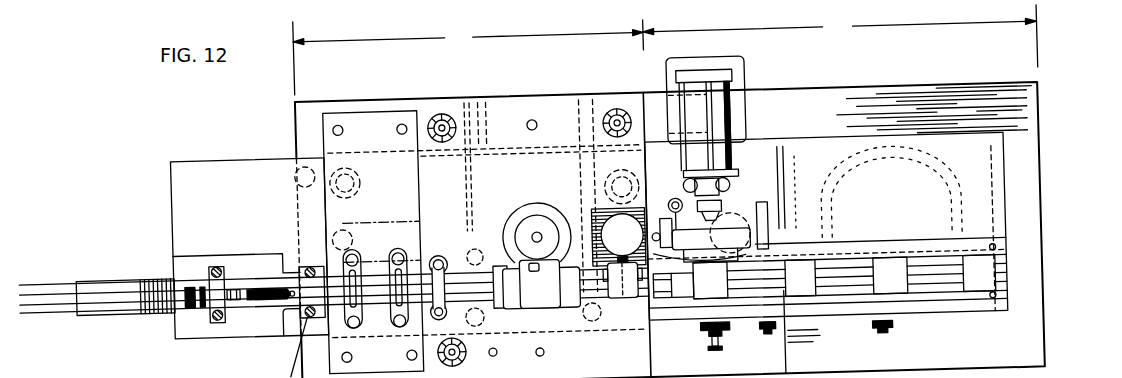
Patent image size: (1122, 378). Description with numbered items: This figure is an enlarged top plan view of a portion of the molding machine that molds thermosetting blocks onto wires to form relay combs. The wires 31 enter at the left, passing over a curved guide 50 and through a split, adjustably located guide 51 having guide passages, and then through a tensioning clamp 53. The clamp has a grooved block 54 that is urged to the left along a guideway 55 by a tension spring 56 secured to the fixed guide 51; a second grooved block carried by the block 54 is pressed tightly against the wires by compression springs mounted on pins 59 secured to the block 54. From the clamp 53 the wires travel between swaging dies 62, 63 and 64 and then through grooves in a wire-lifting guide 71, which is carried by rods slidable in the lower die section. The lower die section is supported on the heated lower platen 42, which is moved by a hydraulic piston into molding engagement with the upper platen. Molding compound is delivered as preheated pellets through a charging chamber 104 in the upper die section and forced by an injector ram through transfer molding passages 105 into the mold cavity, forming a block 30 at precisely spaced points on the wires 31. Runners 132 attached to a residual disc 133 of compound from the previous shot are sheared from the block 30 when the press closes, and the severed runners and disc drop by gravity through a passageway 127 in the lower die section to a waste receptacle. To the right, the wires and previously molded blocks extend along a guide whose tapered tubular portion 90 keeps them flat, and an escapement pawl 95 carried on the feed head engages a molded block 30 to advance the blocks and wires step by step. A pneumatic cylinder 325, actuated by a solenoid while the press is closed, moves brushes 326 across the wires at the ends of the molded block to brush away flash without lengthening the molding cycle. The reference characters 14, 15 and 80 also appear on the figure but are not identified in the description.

The feeding station 14 is at (469, 54).
The cutting station / section line 15 is at (29, 282).
The block 30 is at (878, 283).
The wires 31 is at (55, 296).
The lower platen 42 is at (1030, 123).
The curved guide 50 is at (136, 291).
The split, adjustably located guide 51 is at (216, 255).
The tensioning clamp 53 is at (291, 318).
The grooved block 54 is at (312, 281).
The guideway 55 is at (286, 308).
The tension spring 56 is at (272, 280).
The pins 59 is at (307, 262).
The swaging die 62 is at (354, 245).
The swaging die 63 is at (439, 250).
The swaging die 64 is at (388, 245).
The wire-lifting guide 71 is at (467, 249).
The feed clamp 80 is at (527, 306).
The tapered, tubular portion 90 is at (656, 279).
The escapement pawl 95 is at (685, 292).
The charging chamber 104 is at (544, 223).
The transfer molding passages 105 is at (506, 253).
The passageway 127 is at (636, 179).
The runners 132 is at (620, 256).
The residual disc 133 is at (597, 213).
The pneumatic cylinder 325 is at (733, 83).
The brushes 326 is at (697, 262).